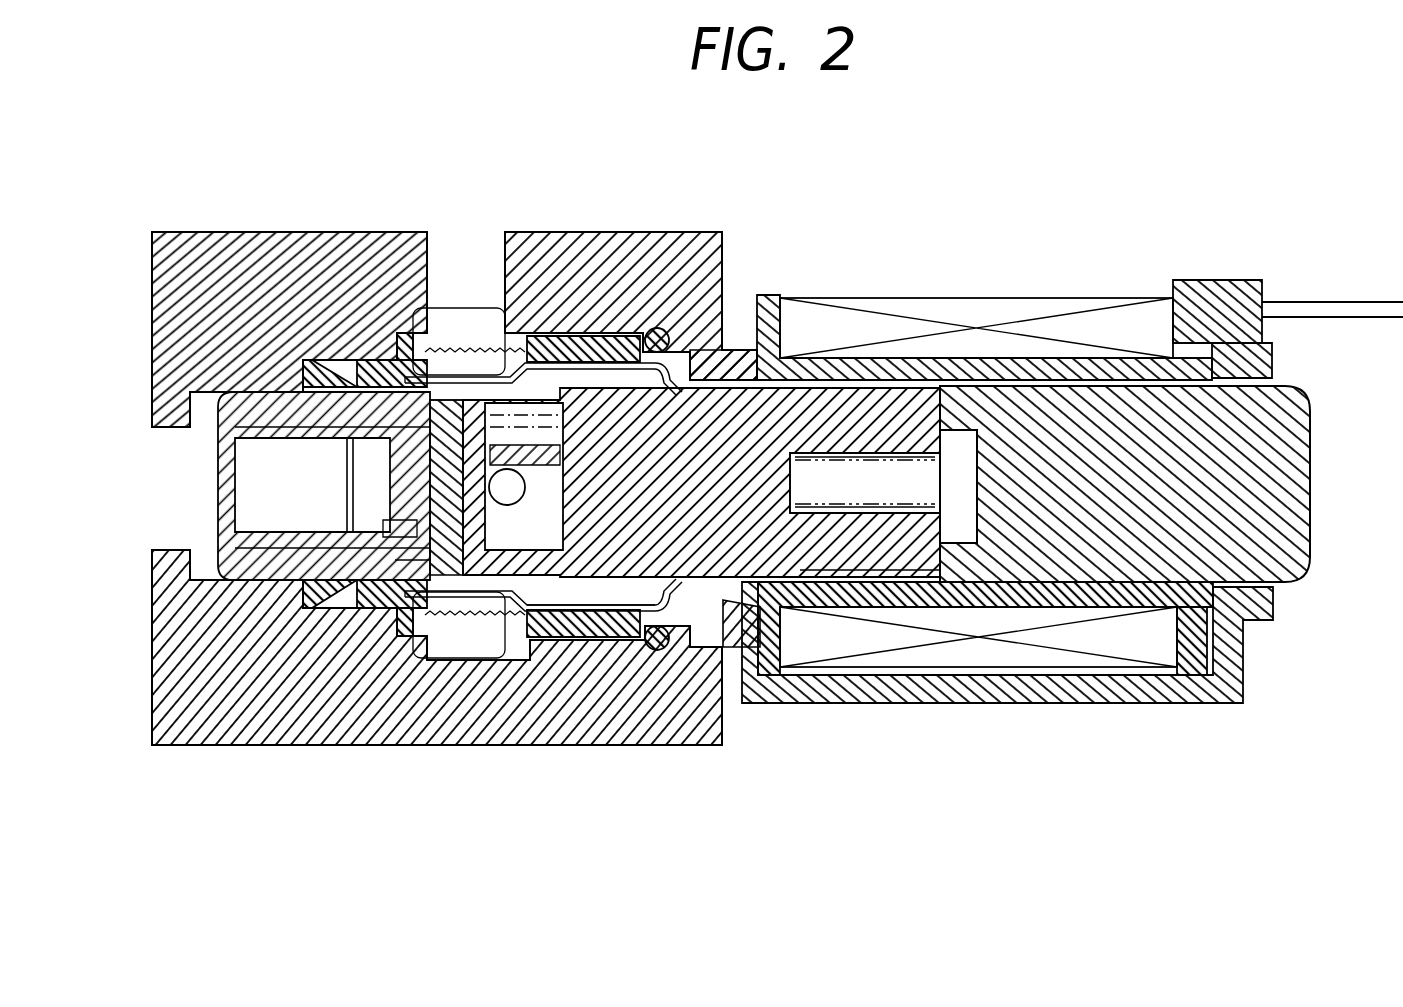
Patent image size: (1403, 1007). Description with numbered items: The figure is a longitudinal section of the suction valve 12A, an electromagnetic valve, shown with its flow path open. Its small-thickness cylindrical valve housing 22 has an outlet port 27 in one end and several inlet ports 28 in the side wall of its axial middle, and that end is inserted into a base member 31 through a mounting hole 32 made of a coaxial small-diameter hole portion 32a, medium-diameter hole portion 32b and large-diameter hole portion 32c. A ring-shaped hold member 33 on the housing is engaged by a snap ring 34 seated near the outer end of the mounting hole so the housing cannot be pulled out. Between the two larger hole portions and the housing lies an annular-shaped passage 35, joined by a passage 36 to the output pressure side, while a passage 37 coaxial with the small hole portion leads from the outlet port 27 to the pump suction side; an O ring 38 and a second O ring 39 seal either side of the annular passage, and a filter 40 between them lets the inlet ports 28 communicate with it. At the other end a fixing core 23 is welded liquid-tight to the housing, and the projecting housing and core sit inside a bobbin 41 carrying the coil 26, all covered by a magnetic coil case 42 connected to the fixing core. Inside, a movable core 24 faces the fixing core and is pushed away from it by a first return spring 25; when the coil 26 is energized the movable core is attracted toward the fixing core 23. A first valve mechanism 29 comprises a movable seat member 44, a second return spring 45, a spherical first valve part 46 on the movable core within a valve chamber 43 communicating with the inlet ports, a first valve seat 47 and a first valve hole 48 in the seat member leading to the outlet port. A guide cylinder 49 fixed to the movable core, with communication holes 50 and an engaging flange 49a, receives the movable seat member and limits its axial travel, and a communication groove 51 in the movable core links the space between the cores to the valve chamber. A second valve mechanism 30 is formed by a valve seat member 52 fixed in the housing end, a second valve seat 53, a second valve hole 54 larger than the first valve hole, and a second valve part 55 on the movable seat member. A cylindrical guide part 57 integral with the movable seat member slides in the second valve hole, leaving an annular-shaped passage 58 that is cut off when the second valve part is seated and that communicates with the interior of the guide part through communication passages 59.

The suction valve 12A is at (770, 290).
The valve housing 22 is at (772, 612).
The fixing core 23 is at (1305, 485).
The movable core 24 is at (862, 355).
The first return spring 25 is at (962, 500).
The coil 26 is at (1005, 300).
The outlet port 27 is at (226, 542).
The inlet ports 28 is at (470, 352).
The first valve mechanism 29 is at (527, 606).
The second valve mechanism 30 is at (440, 396).
The base member 31 is at (715, 300).
The mounting hole 32 is at (686, 628).
The small-diameter hole portion 32a is at (272, 582).
The medium-diameter hole portion 32b is at (330, 610).
The large-diameter hole portion 32c is at (650, 650).
The hold member 33 is at (725, 350).
The snap ring 34 is at (657, 326).
The annular-shaped passage 35 is at (412, 360).
The passage 36 is at (510, 262).
The passage 37 is at (178, 550).
The O ring 38 is at (322, 362).
The O ring 39 is at (577, 338).
The filter 40 is at (500, 598).
The bobbin 41 is at (975, 652).
The coil case 42 is at (1035, 704).
The valve chamber 43 is at (610, 576).
The movable seat member 44 is at (470, 598).
The second return spring 45 is at (560, 422).
The first valve part 46 is at (524, 490).
The first valve seat 47 is at (522, 468).
The first valve hole 48 is at (470, 492).
The guide cylinder 49 is at (740, 548).
The engaging flange 49a is at (405, 565).
The communication holes 50 is at (597, 640).
The communication groove 51 is at (850, 578).
The valve seat member 52 is at (265, 392).
The second valve seat 53 is at (440, 528).
The second valve hole 54 is at (300, 430).
The second valve part 55 is at (402, 345).
The guide part 57 is at (190, 400).
The annular-shaped passage 58 is at (392, 610).
The communication passages 59 is at (385, 522).